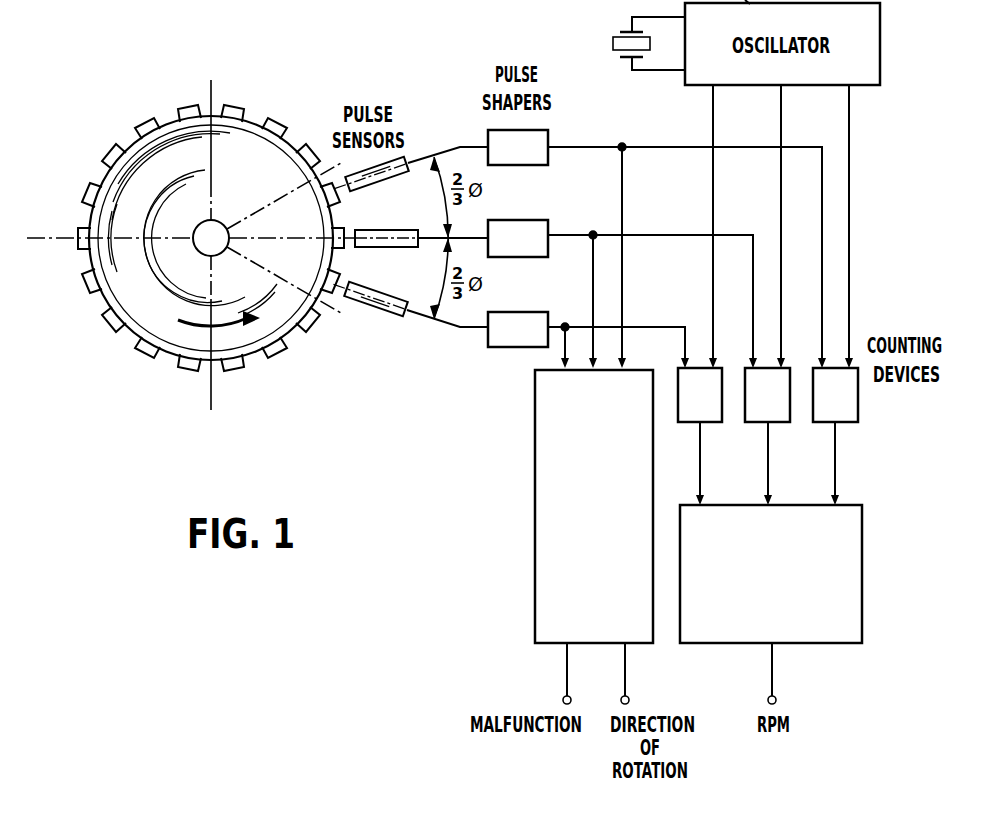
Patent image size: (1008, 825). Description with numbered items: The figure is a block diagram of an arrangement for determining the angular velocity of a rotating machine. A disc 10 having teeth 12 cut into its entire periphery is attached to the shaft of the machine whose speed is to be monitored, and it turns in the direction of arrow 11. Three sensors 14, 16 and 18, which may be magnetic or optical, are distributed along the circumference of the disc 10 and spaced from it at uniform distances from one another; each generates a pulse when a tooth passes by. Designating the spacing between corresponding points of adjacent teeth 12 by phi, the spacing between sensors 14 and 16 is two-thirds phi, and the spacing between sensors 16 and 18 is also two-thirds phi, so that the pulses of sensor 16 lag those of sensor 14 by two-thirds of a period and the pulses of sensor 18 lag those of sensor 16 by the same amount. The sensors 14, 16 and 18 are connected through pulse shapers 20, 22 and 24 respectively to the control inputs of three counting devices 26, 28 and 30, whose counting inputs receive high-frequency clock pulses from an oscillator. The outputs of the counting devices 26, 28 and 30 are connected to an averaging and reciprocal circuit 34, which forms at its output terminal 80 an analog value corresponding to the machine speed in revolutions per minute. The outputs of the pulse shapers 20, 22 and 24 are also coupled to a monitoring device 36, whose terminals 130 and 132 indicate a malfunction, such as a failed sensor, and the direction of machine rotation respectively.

The disc 10 is at (153, 178).
The arrow 11 is at (221, 324).
The teeth 12 is at (268, 117).
The sensor 14 is at (388, 184).
The sensor 16 is at (388, 249).
The sensor 18 is at (378, 315).
The pulse shaper 20 is at (538, 144).
The pulse shaper 22 is at (538, 232).
The pulse shaper 24 is at (530, 318).
The counting device 26 is at (842, 410).
The counting device 28 is at (773, 412).
The counting device 30 is at (707, 413).
The averaging and reciprocal circuit 34 is at (847, 577).
The monitoring device 36 is at (557, 543).
The output terminal 80 is at (777, 698).
The terminal 130 is at (562, 697).
The terminal 132 is at (630, 698).